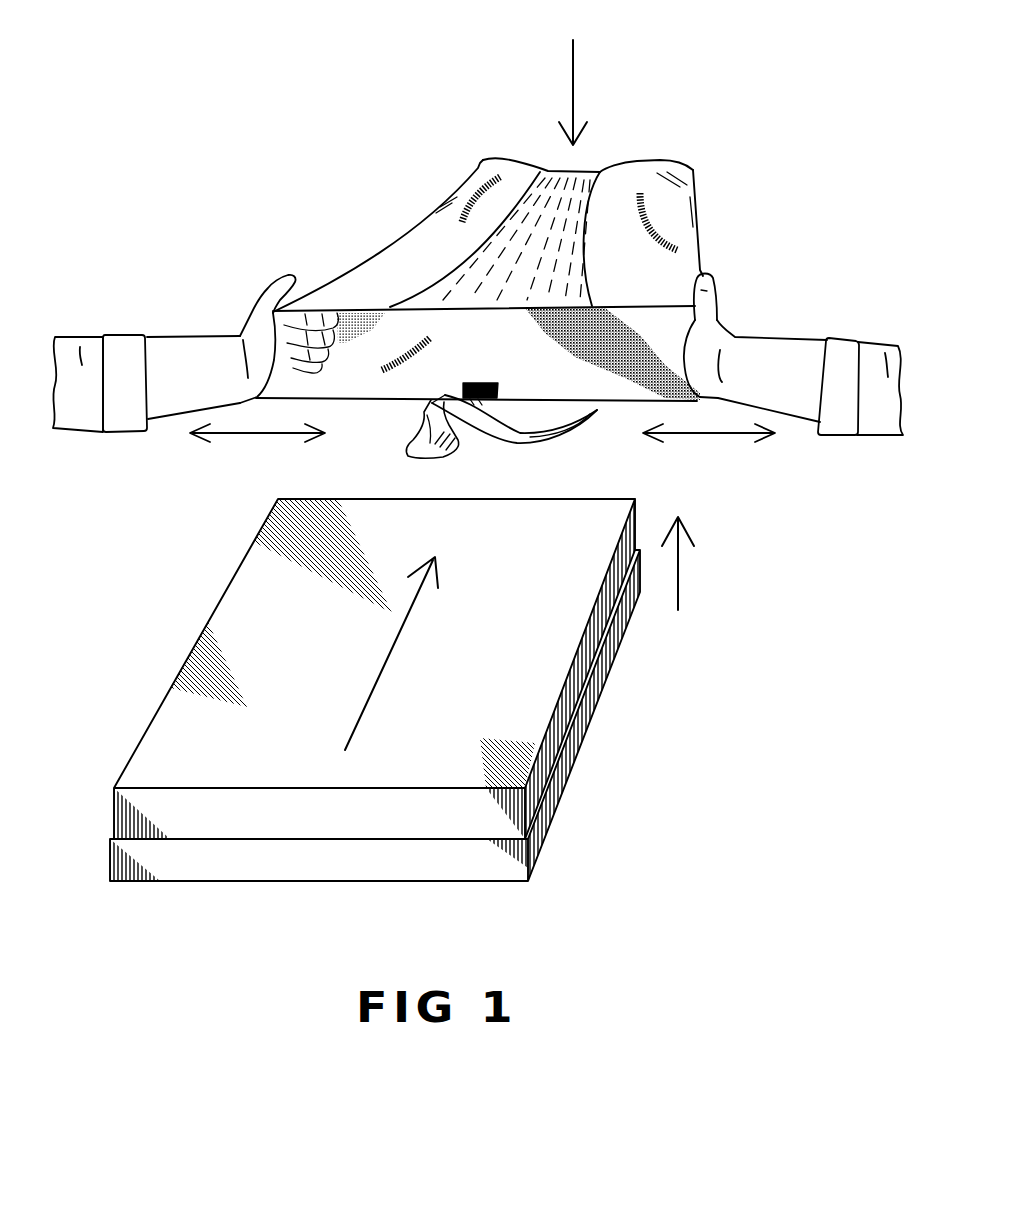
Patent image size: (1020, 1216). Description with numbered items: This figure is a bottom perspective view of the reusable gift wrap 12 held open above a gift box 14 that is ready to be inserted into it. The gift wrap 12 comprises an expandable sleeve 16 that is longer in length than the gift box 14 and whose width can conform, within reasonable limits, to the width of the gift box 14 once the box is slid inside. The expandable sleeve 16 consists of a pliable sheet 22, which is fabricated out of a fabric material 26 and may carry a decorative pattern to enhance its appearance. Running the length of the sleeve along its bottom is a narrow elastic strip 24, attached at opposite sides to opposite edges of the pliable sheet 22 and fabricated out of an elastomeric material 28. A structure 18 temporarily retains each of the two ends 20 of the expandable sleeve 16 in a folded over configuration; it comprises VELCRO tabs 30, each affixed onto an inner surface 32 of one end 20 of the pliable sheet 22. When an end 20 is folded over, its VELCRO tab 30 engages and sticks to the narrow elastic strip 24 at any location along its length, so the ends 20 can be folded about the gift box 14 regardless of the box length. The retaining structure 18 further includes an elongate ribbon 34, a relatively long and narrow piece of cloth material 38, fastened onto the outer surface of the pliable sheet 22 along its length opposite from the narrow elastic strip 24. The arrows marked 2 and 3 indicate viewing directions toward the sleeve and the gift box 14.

The viewing direction arrow for FIG. 2 is at (573, 72).
The viewing direction arrow for FIG. 3 is at (678, 588).
The reusable gift wrap 12 is at (377, 213).
The gift box 14 is at (240, 590).
The expandable sleeve 16 is at (699, 231).
The structure for temporarily retaining 18 is at (467, 380).
The end 20 is at (668, 163).
The pliable sheet 22 is at (356, 277).
The narrow elastic strip 24 is at (557, 172).
The fabric material 26 is at (433, 222).
The elastomeric material 28 is at (586, 178).
The VELCRO tab 30 is at (487, 383).
The inner surface 32 is at (603, 395).
The elongate ribbon 34 is at (550, 435).
The cloth material 38 is at (414, 448).